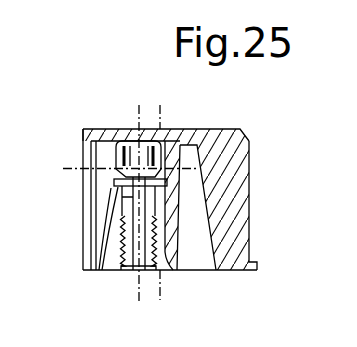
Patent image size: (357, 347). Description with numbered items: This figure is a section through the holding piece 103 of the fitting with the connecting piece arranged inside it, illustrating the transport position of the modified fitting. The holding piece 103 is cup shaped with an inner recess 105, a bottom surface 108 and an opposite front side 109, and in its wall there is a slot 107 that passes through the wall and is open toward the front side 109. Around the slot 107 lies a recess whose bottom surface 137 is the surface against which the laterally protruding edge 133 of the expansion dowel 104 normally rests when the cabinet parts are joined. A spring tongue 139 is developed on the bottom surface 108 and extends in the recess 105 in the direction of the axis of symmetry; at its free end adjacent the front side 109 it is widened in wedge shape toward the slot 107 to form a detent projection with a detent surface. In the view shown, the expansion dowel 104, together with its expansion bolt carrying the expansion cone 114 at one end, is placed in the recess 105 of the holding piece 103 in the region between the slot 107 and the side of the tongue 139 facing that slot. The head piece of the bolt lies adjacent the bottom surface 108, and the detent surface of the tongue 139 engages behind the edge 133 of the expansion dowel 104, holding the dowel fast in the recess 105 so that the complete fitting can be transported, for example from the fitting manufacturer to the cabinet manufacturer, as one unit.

The holding piece 103 is at (252, 192).
The expansion dowel 104 is at (215, 228).
The inner recess 105 is at (103, 271).
The slot 107 is at (100, 213).
The bottom surface 108 is at (102, 129).
The front side 109 is at (221, 271).
The expansion cone 114 is at (135, 271).
The laterally protruding edge 133 is at (115, 186).
The bottom surface of recess 137 is at (88, 238).
The spring tongue 139 is at (166, 187).